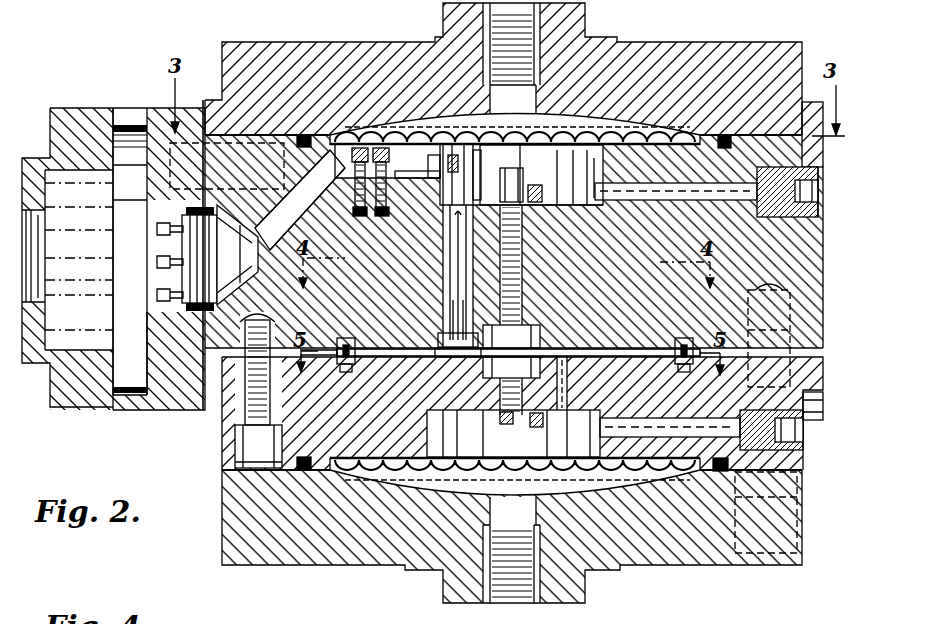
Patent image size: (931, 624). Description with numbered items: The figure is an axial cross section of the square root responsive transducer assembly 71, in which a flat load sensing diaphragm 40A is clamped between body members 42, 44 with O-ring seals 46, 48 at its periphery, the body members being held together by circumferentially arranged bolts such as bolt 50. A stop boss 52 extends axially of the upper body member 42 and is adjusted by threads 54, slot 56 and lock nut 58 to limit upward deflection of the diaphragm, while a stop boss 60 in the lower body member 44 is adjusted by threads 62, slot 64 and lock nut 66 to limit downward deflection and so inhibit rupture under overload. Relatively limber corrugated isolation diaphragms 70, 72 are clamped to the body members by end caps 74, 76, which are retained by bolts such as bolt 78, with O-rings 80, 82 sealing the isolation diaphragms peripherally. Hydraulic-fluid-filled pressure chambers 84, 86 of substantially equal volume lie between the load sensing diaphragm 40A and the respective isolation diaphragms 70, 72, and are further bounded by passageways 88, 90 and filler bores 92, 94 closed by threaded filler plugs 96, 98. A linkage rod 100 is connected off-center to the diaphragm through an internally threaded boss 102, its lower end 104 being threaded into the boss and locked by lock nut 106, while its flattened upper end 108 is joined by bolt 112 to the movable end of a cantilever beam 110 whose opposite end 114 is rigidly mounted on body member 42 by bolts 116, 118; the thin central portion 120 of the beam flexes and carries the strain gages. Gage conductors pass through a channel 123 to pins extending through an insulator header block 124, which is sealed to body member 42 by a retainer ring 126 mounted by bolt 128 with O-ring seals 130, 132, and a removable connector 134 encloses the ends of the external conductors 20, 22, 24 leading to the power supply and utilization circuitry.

The external conductor 20 is at (157, 231).
The external conductor 22 is at (157, 296).
The external conductor 24 is at (157, 264).
The load sensing diaphragm 40A is at (610, 348).
The body member 42 is at (812, 262).
The body member 44 is at (795, 466).
The O-ring seal 46 is at (343, 340).
The O-ring seal 48 is at (345, 372).
The bolt 50 is at (247, 445).
The stop boss 52 is at (524, 258).
The threads 54 is at (524, 291).
The slot 56 is at (515, 185).
The lock nut 58 is at (545, 196).
The stop boss 60 is at (496, 373).
The threads 62 is at (512, 393).
The slot 64 is at (505, 441).
The lock nut 66 is at (498, 426).
The isolation diaphragm 70 is at (516, 140).
The valve assembly 71 is at (387, 573).
The isolation diaphragm 72 is at (505, 466).
The end cap 74 is at (705, 58).
The end cap 76 is at (660, 556).
The bolt 78 is at (773, 556).
The O-ring 80 is at (304, 134).
The O-ring 82 is at (721, 474).
The pressure chamber 84 is at (587, 170).
The pressure chamber 86 is at (570, 450).
The passageway 88 is at (440, 240).
The passageway 90 is at (568, 383).
The filler bore 92 is at (642, 187).
The filler bore 94 is at (650, 418).
The threaded filler plug 96 is at (820, 183).
The threaded filler plug 98 is at (812, 420).
The rod 100 is at (446, 279).
The internally threaded boss 102 is at (445, 354).
The lower end 104 is at (450, 306).
The lock nut 106 is at (445, 333).
The upper end 108 is at (462, 176).
The cantilever beam 110 is at (434, 168).
The bolt 112 is at (481, 168).
The opposite end 114 is at (408, 176).
The bolt 116 is at (360, 148).
The bolt 118 is at (381, 148).
The central portion 120 is at (390, 210).
The channel 123 is at (310, 198).
The header block 124 is at (238, 268).
The retainer ring 126 is at (145, 113).
The bolt 128 is at (160, 172).
The O-ring seal 130 is at (212, 312).
The O-ring seal 132 is at (192, 315).
The removable connector 134 is at (50, 127).